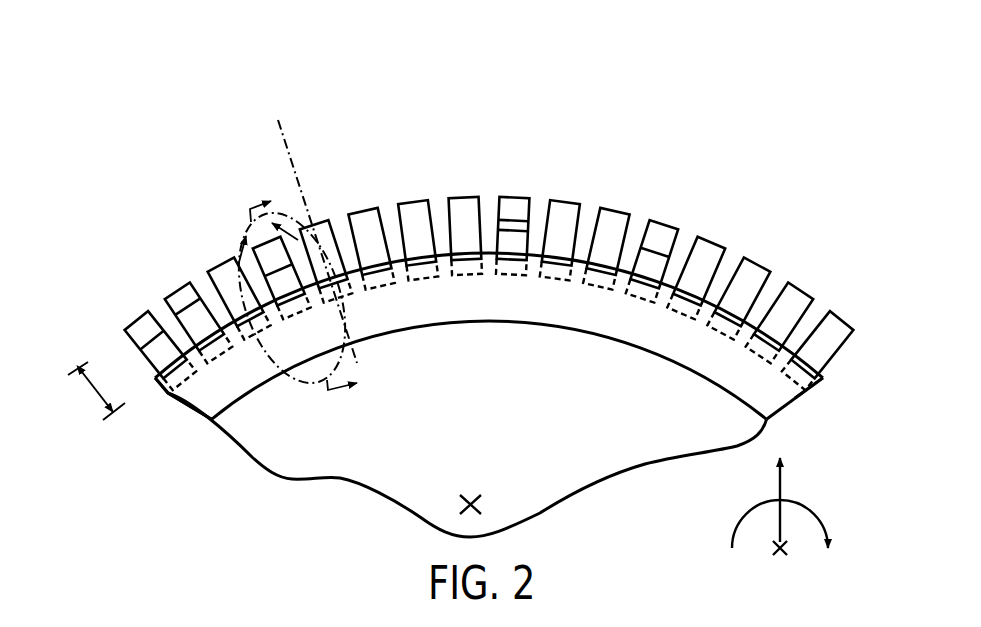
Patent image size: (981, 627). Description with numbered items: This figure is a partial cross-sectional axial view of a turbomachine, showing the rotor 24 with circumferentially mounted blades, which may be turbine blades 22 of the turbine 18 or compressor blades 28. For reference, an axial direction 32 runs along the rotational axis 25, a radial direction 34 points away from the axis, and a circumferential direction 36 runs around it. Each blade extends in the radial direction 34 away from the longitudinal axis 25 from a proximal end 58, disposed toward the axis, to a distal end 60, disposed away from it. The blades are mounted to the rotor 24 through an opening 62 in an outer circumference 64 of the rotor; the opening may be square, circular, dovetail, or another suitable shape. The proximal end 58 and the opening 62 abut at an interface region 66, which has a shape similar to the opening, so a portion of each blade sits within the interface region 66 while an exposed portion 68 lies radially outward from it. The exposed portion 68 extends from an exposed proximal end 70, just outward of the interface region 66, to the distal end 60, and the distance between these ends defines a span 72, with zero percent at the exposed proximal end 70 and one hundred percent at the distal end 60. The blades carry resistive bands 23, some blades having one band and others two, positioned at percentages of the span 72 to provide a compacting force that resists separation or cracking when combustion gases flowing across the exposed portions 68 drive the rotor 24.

The turbine 18 is at (412, 72).
The turbine blades 22 is at (618, 199).
The resistive bands 23 is at (163, 331).
The rotor 24 is at (198, 418).
The rotational axis 25 is at (482, 504).
The compressor blades 28 is at (806, 280).
The axial direction 32 is at (784, 554).
The radial direction 34 is at (775, 495).
The circumferential direction 36 is at (807, 501).
The proximal end 58 is at (166, 397).
The distal end 60 is at (162, 283).
The opening 62 is at (781, 348).
The outer circumference 64 is at (823, 380).
The interface region 66 is at (679, 319).
The exposed portion 68 is at (124, 331).
The exposed proximal end 70 is at (140, 374).
The span 72 is at (98, 388).